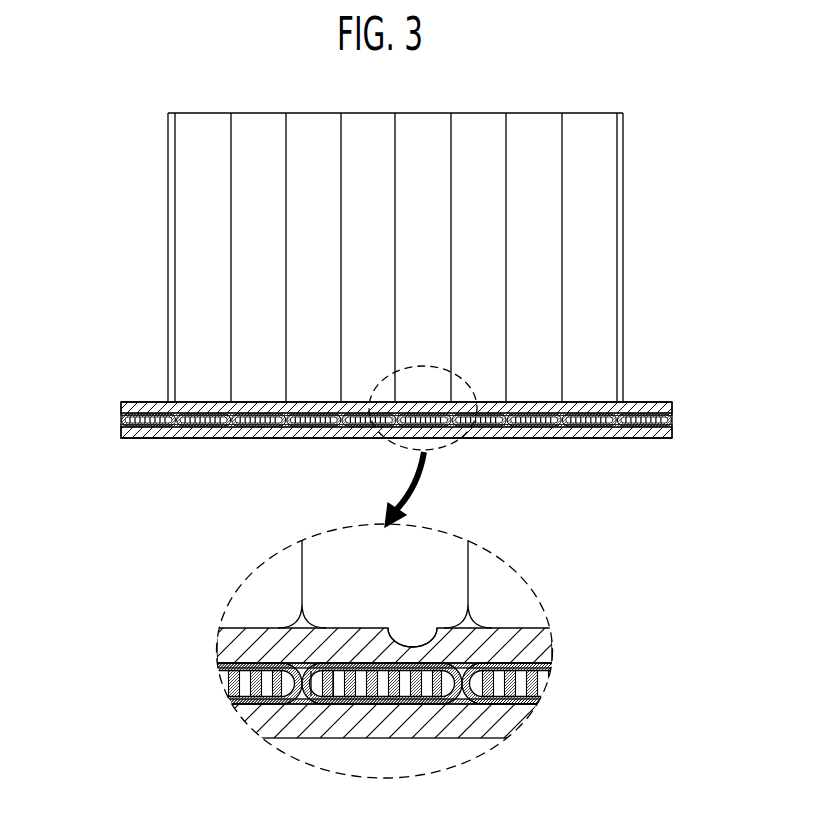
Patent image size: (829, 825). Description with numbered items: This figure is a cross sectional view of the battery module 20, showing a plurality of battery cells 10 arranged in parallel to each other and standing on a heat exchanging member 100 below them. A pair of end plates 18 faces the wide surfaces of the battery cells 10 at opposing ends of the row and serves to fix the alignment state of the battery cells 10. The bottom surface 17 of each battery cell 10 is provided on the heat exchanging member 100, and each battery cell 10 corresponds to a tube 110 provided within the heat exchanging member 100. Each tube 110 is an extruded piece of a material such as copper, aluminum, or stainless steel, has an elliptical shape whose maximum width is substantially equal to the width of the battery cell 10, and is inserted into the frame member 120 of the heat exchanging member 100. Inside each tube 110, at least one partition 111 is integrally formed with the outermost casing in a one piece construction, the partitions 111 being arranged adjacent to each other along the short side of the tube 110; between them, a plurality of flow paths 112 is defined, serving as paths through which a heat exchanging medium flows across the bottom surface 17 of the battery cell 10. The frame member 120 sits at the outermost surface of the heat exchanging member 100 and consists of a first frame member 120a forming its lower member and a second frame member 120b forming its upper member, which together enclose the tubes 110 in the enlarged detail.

The battery cell 10 is at (396, 342).
The bottom surface 17 is at (423, 562).
The end plate 18 is at (395, 257).
The battery module 20 is at (330, 118).
The heat exchanging member 100 is at (352, 434).
The tube 110 is at (397, 618).
The partition 111 is at (335, 747).
The flow path 112 is at (396, 618).
The frame member 120 is at (757, 455).
The first frame member 120a is at (437, 584).
The second frame member 120b is at (437, 529).